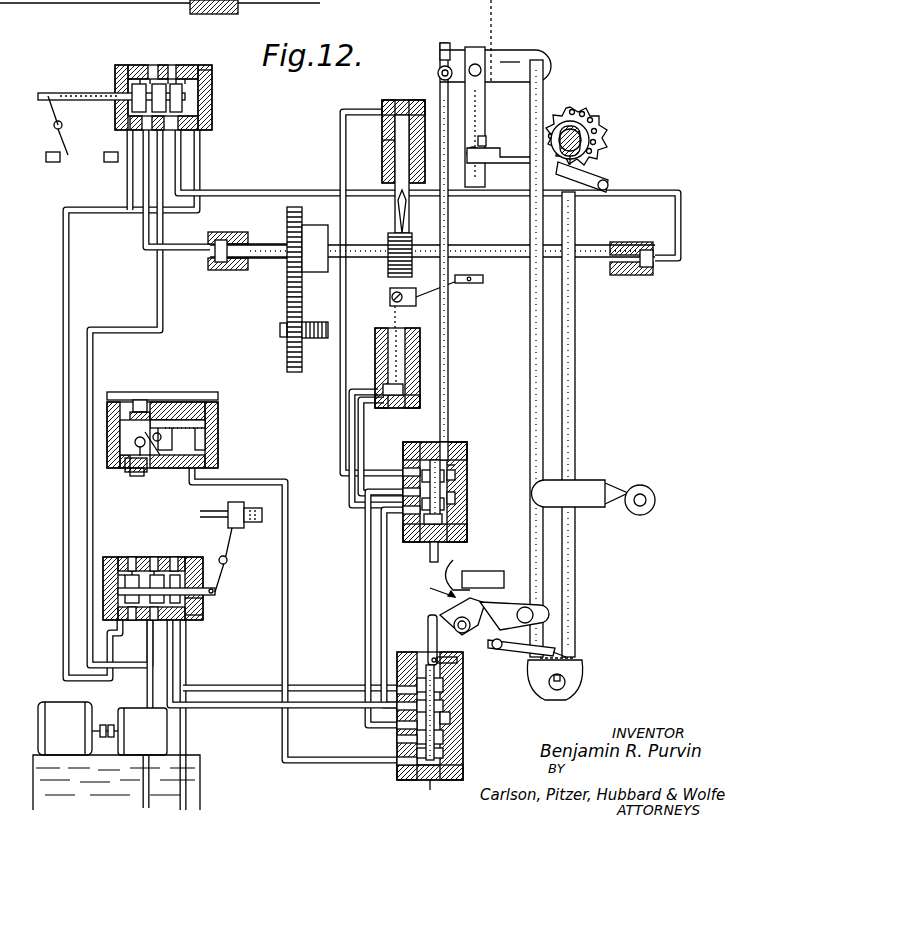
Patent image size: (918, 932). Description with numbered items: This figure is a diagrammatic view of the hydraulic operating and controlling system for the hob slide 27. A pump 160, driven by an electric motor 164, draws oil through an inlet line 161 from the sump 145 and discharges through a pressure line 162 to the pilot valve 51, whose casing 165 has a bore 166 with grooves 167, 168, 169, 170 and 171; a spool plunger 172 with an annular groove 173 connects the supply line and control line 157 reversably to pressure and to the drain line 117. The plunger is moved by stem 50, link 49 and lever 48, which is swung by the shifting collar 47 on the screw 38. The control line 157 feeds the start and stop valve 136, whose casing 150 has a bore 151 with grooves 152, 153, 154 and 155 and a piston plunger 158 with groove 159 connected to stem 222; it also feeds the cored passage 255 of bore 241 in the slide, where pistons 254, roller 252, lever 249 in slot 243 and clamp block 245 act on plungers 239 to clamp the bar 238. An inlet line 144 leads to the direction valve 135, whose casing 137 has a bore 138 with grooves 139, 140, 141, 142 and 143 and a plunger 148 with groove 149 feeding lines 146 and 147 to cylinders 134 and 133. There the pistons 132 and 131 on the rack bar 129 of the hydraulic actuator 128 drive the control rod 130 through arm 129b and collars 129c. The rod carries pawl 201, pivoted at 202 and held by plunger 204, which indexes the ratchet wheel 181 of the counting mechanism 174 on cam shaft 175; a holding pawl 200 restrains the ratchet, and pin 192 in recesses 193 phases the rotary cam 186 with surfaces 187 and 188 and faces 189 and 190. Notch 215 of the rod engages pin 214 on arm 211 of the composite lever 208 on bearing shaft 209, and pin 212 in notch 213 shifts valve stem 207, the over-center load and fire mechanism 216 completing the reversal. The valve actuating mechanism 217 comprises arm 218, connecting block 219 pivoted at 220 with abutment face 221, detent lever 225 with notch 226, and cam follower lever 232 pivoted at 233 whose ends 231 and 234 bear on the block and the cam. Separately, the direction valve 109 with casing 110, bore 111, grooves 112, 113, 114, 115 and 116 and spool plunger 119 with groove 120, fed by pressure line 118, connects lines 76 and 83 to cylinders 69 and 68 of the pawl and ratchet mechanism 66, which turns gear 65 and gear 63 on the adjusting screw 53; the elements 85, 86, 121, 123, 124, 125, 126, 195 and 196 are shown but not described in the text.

The hob slide 27 is at (218, 410).
The screw 38 is at (256, 508).
The shifting collar 47 is at (232, 498).
The lever 48 is at (228, 572).
The link 49 is at (218, 592).
The stem 50 is at (205, 602).
The pilot valve 51 is at (192, 625).
The adjusting screw 53 is at (318, 322).
The gear 63 is at (286, 306).
The gear 65 is at (286, 270).
The pawl and ratchet mechanism 66 is at (315, 222).
The cylinder 68 is at (238, 232).
The cylinder 69 is at (648, 228).
The line 76 is at (678, 230).
The line 83 is at (184, 250).
The shaft end 85 is at (240, 238).
The shaft end 86 is at (624, 262).
The direction valve 109 is at (216, 128).
The casing 110 is at (214, 106).
The axial bore 111 is at (176, 66).
The groove 112 is at (130, 66).
The groove 113 is at (140, 65).
The central groove 114 is at (168, 66).
The groove 115 is at (186, 66).
The groove 116 is at (204, 62).
The drain line 117 is at (68, 245).
The pressure line 118 is at (158, 296).
The spool plunger 119 is at (190, 96).
The central groove 120 is at (155, 66).
The valve rod 121 is at (84, 92).
The lever 123 is at (62, 114).
The pivot 124 is at (62, 128).
The stop 125 is at (52, 162).
The stop 126 is at (110, 162).
The hydraulic actuator 128 is at (380, 180).
The rack bar 129 is at (396, 205).
The arm 129b is at (420, 304).
The collars 129c is at (480, 285).
The control rod 130 is at (476, 47).
The piston 131 is at (430, 125).
The piston 132 is at (388, 350).
The cylinder 133 is at (395, 137).
The cylinder 134 is at (386, 408).
The direction valve 135 is at (462, 440).
The start and stop valve 136 is at (392, 775).
The valve casing 137 is at (465, 445).
The bore 138 is at (460, 500).
The groove 139 is at (458, 526).
The groove 140 is at (458, 508).
The central groove 141 is at (455, 488).
The groove 142 is at (460, 475).
The groove 143 is at (462, 462).
The inlet line 144 is at (365, 571).
The sump 145 is at (203, 788).
The line 146 is at (350, 494).
The line 147 is at (340, 430).
The valve plunger 148 is at (436, 545).
The annular groove 149 is at (430, 524).
The valve casing 150 is at (460, 775).
The axial bore 151 is at (438, 785).
The groove 152 is at (448, 758).
The groove 153 is at (446, 740).
The groove 154 is at (450, 708).
The groove 155 is at (450, 690).
The control line 157 is at (282, 668).
The valve plunger 158 is at (430, 780).
The annular groove 159 is at (397, 738).
The pump 160 is at (138, 712).
The inlet line 161 is at (148, 772).
The pressure discharge line 162 is at (145, 668).
The electric motor 164 is at (60, 708).
The casing 165 is at (200, 618).
The central bore 166 is at (140, 580).
The groove 167 is at (122, 558).
The groove 168 is at (133, 570).
The central groove 169 is at (155, 572).
The groove 170 is at (168, 574).
The groove 171 is at (186, 578).
The valve plunger 172 is at (118, 592).
The annular groove 173 is at (118, 577).
The counting mechanism 174 is at (553, 93).
The cam shaft 175 is at (576, 338).
The ratchet wheel 181 is at (582, 124).
The rotary cam 186 is at (584, 668).
The cam surface 187 is at (575, 656).
The cam surface 188 is at (580, 696).
The arcuate face 189 is at (450, 722).
The arcuate face 190 is at (586, 683).
The pin 192 is at (590, 145).
The recesses 193 is at (580, 135).
The bushing 195 is at (598, 155).
The holes 196 is at (574, 110).
The holding pawl 200 is at (595, 178).
The pawl 201 is at (505, 163).
The pivot 202 is at (480, 150).
The spring-actuated plunger 204 is at (484, 136).
The valve stem 207 is at (444, 43).
The composite lever 208 is at (515, 55).
The bearing shaft 209 is at (528, 350).
The arm 211 is at (500, 62).
The pin 212 is at (438, 66).
The transverse notch 213 is at (440, 55).
The pin 214 is at (490, 41).
The transverse notch 215 is at (482, 90).
The over-center load and fire mechanism 216 is at (622, 465).
The valve actuating mechanism 217 is at (430, 585).
The arm 218 is at (535, 605).
The connecting block 219 is at (445, 610).
The pivot 220 is at (472, 632).
The abutment face 221 is at (460, 663).
The valve stem 222 is at (428, 640).
The detent lever 225 is at (497, 580).
The notch 226 is at (453, 562).
The rounded end 231 is at (530, 610).
The cam follower lever 232 is at (540, 640).
The pivot 233 is at (503, 644).
The rounded end 234 is at (560, 654).
The clamping bar 238 is at (205, 392).
The plunger 239 is at (135, 478).
The bore 241 is at (120, 430).
The slot 243 is at (128, 468).
The clamp block 245 is at (142, 400).
The actuating lever 249 is at (145, 462).
The roller 252 is at (160, 458).
The actuating piston 254 is at (210, 440).
The cored passage 255 is at (192, 428).